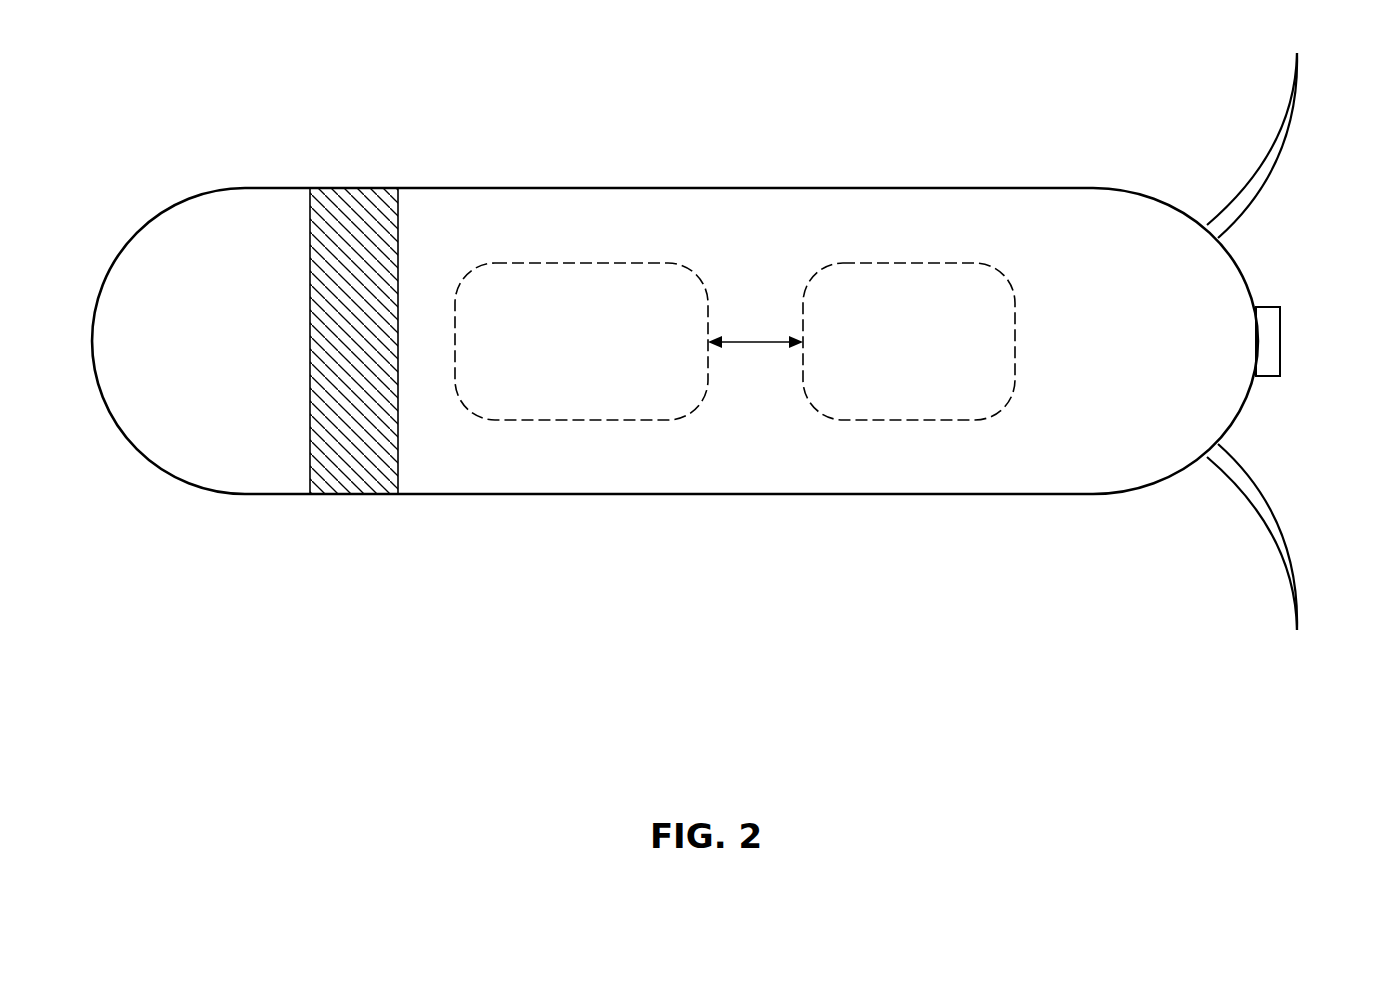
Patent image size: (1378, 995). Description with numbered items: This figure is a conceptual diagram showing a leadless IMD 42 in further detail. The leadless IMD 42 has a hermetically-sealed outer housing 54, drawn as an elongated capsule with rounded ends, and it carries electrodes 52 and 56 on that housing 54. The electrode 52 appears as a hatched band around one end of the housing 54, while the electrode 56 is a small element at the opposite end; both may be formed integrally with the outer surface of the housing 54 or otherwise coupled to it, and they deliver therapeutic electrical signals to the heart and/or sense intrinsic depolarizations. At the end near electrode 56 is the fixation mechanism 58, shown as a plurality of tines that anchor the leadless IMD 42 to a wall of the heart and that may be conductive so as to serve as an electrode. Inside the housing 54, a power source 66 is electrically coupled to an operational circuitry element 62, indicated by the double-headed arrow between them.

The leadless IMD 42 is at (928, 132).
The electrode 52 is at (357, 187).
The outer housing 54 is at (623, 187).
The electrode 56 is at (1280, 350).
The fixation mechanism 58 is at (1263, 517).
The operational circuitry element 62 is at (923, 381).
The power source 66 is at (567, 367).